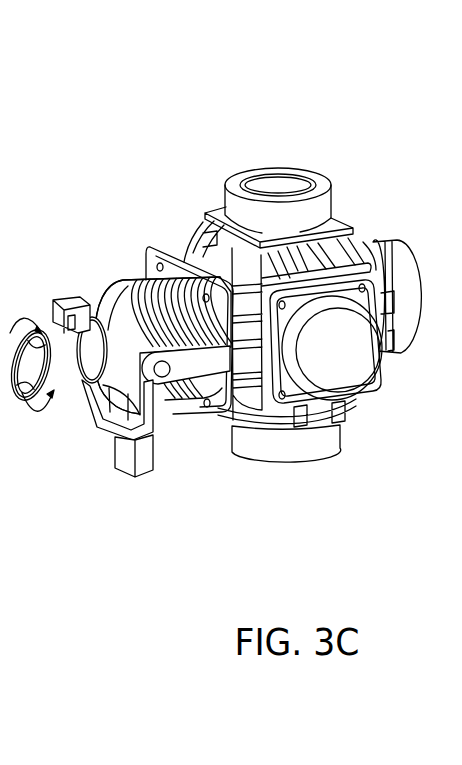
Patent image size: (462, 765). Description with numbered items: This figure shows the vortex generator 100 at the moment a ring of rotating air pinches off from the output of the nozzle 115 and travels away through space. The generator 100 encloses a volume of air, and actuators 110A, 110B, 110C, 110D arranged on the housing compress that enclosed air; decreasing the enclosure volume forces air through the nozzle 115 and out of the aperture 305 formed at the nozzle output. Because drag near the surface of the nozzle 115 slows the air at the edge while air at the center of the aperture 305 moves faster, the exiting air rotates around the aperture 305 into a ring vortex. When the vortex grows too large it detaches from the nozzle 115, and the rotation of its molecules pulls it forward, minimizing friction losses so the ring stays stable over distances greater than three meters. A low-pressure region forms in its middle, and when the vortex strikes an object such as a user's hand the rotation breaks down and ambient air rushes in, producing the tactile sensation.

The vortex generator 100 is at (393, 117).
The actuator 110A is at (277, 170).
The actuator 110B is at (382, 234).
The actuator 110C is at (376, 392).
The actuator 110D is at (283, 463).
The nozzle 115 is at (132, 283).
The aperture 305 is at (95, 355).